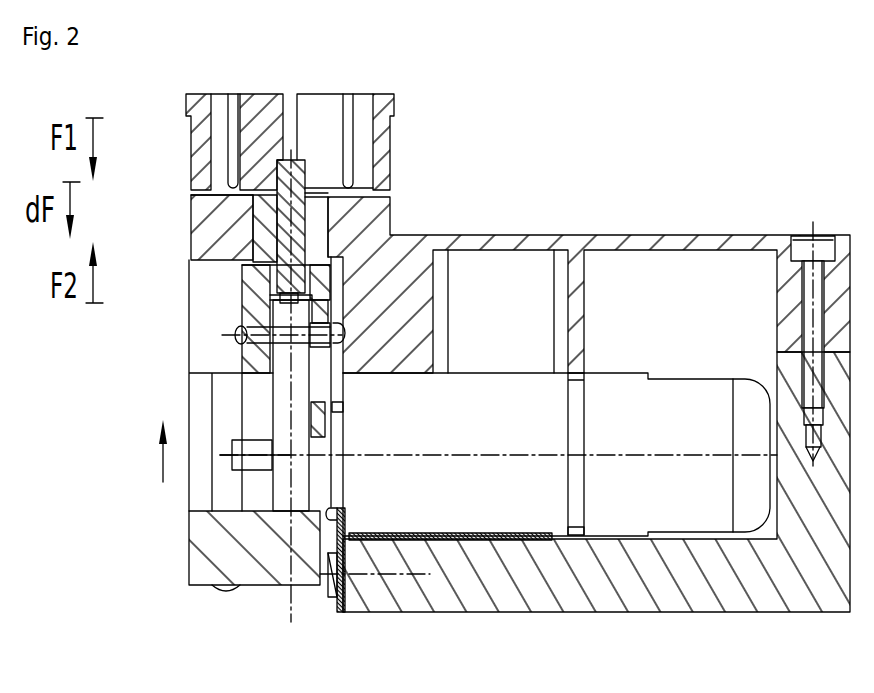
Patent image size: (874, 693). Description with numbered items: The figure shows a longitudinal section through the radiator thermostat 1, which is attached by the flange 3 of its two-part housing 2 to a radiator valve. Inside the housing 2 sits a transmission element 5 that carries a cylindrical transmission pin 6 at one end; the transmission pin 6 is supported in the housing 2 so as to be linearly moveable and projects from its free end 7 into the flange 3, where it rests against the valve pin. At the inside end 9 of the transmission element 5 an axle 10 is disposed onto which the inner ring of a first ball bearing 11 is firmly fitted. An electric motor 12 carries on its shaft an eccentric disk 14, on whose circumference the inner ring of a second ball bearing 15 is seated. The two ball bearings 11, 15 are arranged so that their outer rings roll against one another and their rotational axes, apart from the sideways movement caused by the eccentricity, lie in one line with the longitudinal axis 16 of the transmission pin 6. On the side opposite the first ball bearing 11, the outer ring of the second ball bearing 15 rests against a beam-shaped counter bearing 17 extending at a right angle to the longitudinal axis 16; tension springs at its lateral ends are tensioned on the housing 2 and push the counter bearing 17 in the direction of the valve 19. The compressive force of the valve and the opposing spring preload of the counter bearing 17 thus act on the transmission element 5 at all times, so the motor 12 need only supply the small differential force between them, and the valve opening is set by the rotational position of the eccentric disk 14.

The radiator thermostat 1 is at (605, 213).
The housing 2 is at (525, 580).
The flange 3 is at (257, 132).
The transmission element 5 is at (252, 295).
The transmission pin 6 is at (285, 213).
The free end 7 is at (318, 153).
The inside end 9 is at (349, 323).
The axle 10 is at (252, 343).
The first ball bearing 11 is at (300, 362).
The electric motor 12 is at (500, 483).
The eccentric disk 14 is at (333, 410).
The second ball bearing 15 is at (283, 495).
The longitudinal axis 16 is at (292, 593).
The counter bearing 17 is at (225, 560).
The direction of the valve 19 is at (163, 470).